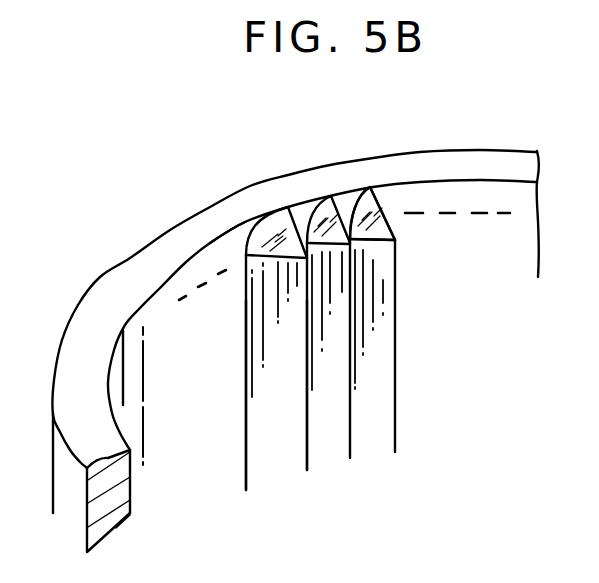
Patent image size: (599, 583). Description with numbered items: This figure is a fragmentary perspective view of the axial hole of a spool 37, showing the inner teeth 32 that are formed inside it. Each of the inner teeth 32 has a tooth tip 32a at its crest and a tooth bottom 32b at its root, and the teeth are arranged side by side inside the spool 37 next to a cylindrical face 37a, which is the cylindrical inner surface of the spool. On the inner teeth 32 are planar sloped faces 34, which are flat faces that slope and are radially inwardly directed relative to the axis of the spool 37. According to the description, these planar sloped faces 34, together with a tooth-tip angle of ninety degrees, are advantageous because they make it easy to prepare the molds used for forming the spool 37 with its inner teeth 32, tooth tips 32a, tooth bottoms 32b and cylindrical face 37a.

The inner teeth 32 is at (437, 400).
The tooth tip 32a is at (305, 432).
The tooth bottom 32b is at (243, 438).
The planar sloped face 34 is at (362, 218).
The spool 37 is at (115, 280).
The cylindrical face 37a is at (260, 223).